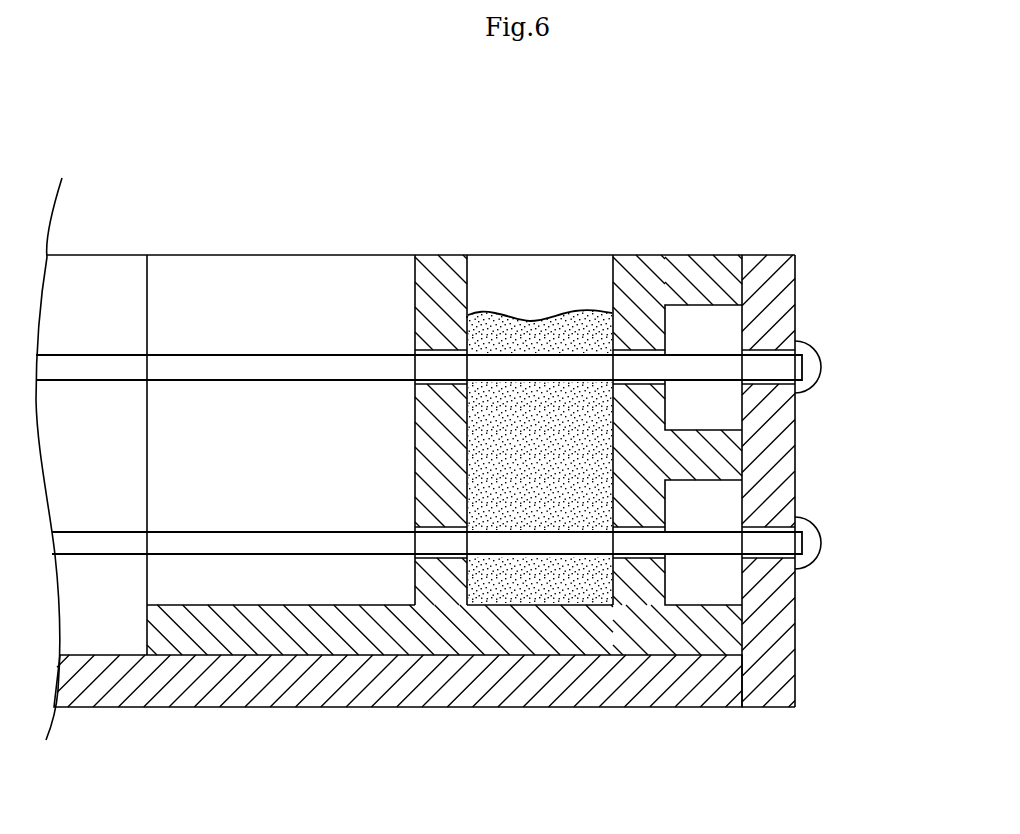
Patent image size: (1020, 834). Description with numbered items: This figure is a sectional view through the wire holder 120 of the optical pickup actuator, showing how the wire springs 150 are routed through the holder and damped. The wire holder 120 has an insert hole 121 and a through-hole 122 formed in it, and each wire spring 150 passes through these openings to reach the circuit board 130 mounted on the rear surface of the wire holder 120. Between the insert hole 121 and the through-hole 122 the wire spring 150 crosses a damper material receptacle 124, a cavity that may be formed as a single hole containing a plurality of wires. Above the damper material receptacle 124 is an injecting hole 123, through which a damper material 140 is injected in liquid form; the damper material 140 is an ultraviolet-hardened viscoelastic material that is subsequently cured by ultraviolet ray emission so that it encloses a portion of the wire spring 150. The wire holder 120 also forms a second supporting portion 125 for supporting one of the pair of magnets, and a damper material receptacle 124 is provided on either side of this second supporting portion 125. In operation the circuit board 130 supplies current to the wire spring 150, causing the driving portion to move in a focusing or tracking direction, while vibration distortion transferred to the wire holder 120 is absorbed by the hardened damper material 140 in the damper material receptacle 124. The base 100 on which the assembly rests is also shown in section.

The base plate 100 is at (418, 683).
The wire holder 120 is at (300, 633).
The insert hole 121 is at (448, 350).
The through-hole 122 is at (643, 350).
The injecting hole 123 is at (600, 278).
The damper material receptacle 124 is at (468, 285).
The second supporting portion 125 is at (205, 577).
The circuit board 130 is at (768, 633).
The damper material 140 is at (542, 322).
The wire spring 150 is at (226, 365).